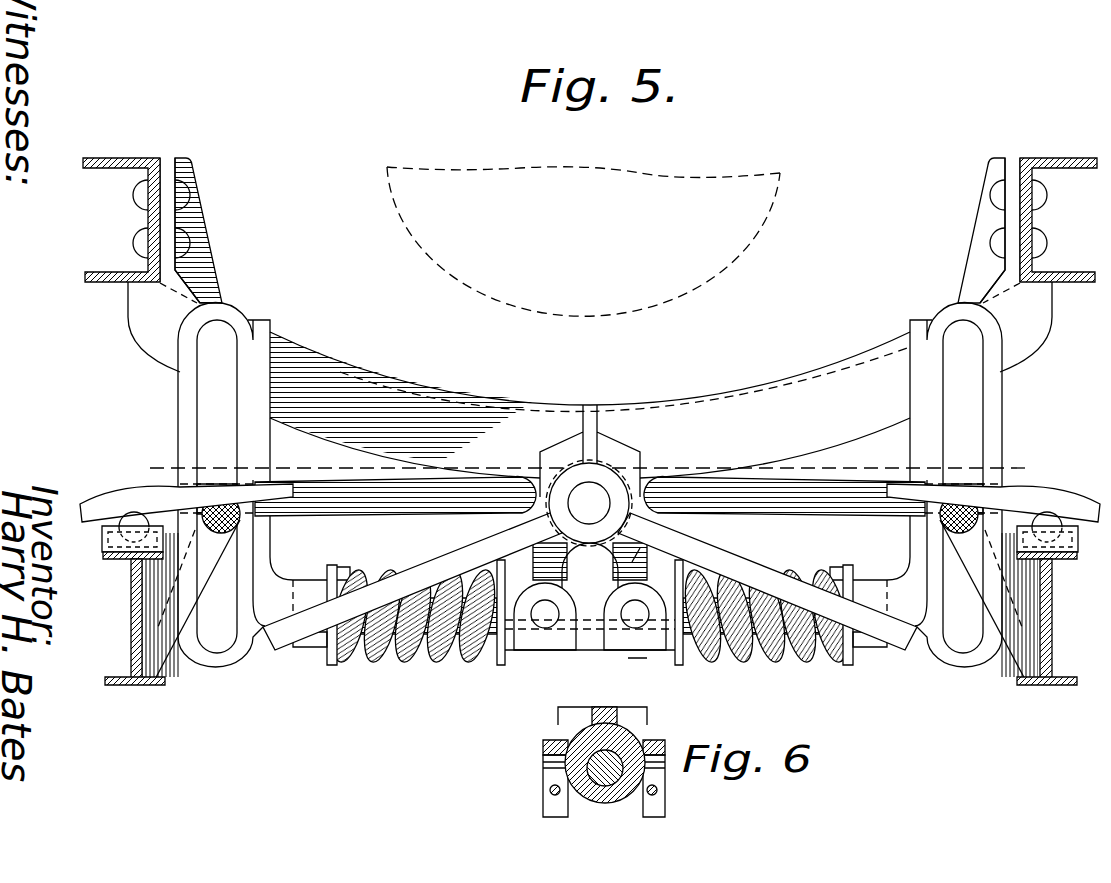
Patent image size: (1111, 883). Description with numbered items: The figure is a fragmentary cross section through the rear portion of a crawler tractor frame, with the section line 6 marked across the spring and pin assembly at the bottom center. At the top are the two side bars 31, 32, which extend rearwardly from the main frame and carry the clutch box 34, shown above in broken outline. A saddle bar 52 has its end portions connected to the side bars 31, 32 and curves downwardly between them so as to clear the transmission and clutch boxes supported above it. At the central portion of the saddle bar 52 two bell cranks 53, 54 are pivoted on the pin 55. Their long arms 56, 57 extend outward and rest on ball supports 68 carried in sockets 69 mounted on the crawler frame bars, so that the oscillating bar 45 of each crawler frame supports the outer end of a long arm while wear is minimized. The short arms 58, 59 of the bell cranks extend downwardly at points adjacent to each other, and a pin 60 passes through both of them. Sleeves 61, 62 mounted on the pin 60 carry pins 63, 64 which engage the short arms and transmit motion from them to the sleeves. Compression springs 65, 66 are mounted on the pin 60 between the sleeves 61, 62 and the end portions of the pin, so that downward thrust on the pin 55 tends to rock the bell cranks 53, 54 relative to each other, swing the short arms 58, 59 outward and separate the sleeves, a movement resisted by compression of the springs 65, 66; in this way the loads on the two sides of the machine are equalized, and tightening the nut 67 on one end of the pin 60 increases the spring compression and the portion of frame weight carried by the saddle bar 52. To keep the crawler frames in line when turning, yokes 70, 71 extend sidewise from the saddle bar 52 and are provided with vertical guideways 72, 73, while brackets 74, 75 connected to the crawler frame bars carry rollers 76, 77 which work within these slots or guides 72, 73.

In FIG. 5, the side bar 31 is at (1067, 168).
In FIG. 5, the side bar 32 is at (119, 168).
In FIG. 5, the clutch box 34 is at (572, 167).
In FIG. 5, the oscillating bar 45 is at (132, 602).
In FIG. 5, the saddle bar 52 is at (407, 397).
In FIG. 5, the bell crank 53 is at (370, 517).
In FIG. 5, the bell crank 54 is at (800, 522).
In FIG. 5, the pin 55 is at (593, 490).
In FIG. 5, the long arm 56 is at (163, 490).
In FIG. 5, the long arm 57 is at (1017, 488).
In FIG. 5, the short arm 58 is at (527, 640).
In FIG. 5, the short arm 59 is at (657, 637).
In FIG. 6, the short arm 59 is at (557, 745).
In FIG. 5, the section line 6 is at (636, 612).
In FIG. 5, the pin 60 is at (597, 617).
In FIG. 6, the pin 60 is at (637, 800).
In FIG. 5, the sleeve 61 is at (487, 653).
In FIG. 5, the sleeve 62 is at (687, 647).
In FIG. 6, the sleeve 62 is at (568, 803).
In FIG. 5, the pin 63 is at (547, 620).
In FIG. 5, the pin 64 is at (637, 617).
In FIG. 6, the pin 64 is at (547, 762).
In FIG. 5, the compression spring 65 is at (402, 660).
In FIG. 5, the compression spring 66 is at (783, 663).
In FIG. 5, the nut 67 is at (877, 640).
In FIG. 5, the ball support 68 is at (110, 517).
In FIG. 5, the socket 69 is at (103, 542).
In FIG. 5, the yoke 70 is at (277, 627).
In FIG. 5, the yoke 71 is at (913, 623).
In FIG. 5, the vertical guideway 72 is at (213, 420).
In FIG. 5, the vertical guideway 73 is at (977, 413).
In FIG. 5, the bracket 74 is at (160, 630).
In FIG. 5, the bracket 75 is at (1027, 627).
In FIG. 5, the roller 76 is at (218, 500).
In FIG. 5, the roller 77 is at (963, 495).